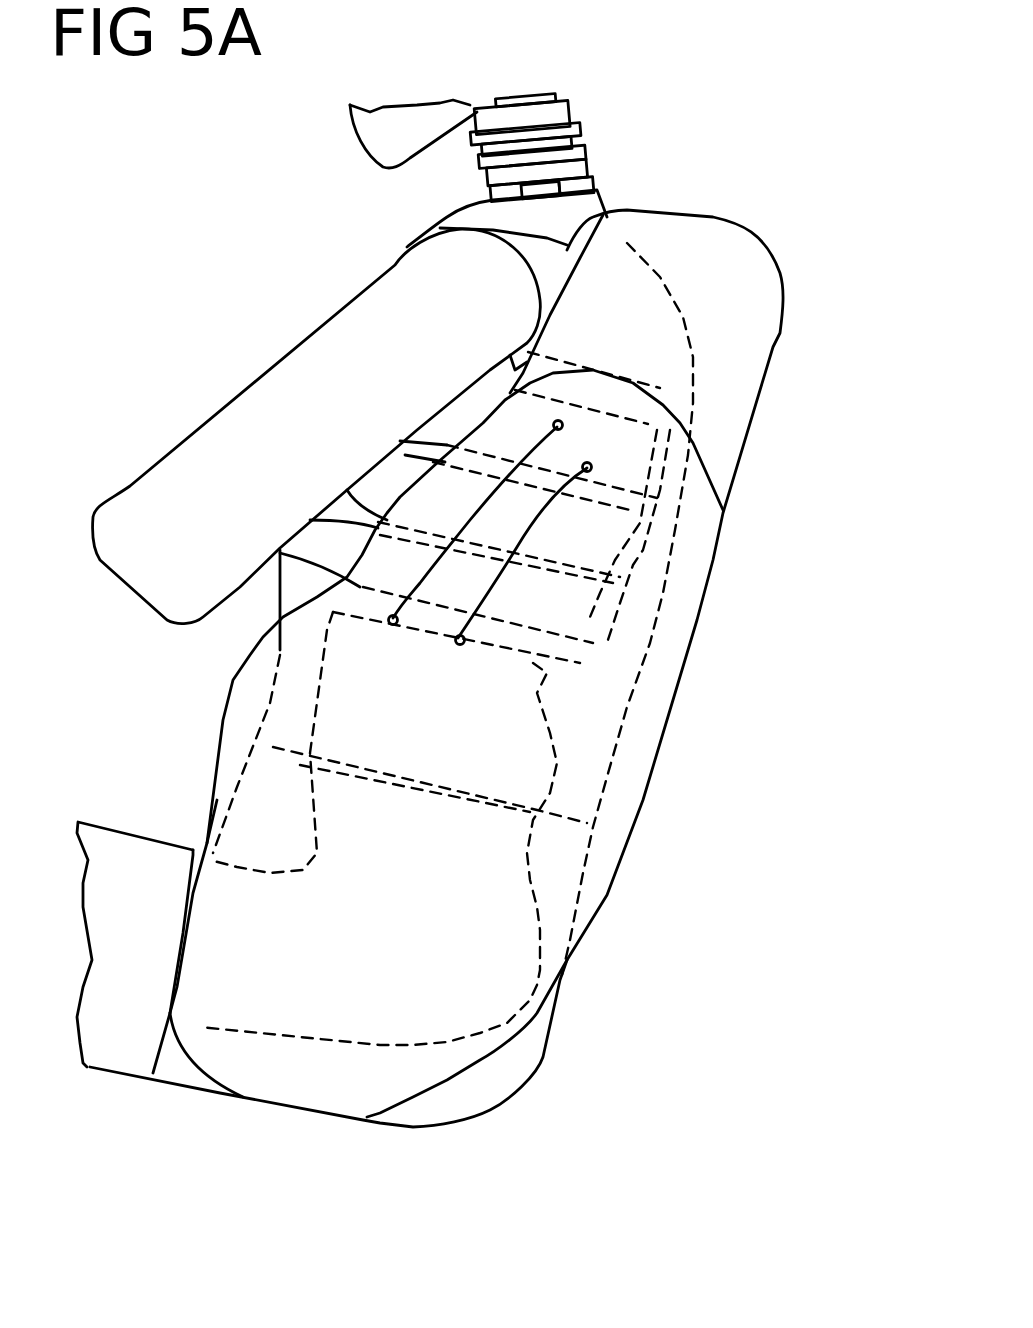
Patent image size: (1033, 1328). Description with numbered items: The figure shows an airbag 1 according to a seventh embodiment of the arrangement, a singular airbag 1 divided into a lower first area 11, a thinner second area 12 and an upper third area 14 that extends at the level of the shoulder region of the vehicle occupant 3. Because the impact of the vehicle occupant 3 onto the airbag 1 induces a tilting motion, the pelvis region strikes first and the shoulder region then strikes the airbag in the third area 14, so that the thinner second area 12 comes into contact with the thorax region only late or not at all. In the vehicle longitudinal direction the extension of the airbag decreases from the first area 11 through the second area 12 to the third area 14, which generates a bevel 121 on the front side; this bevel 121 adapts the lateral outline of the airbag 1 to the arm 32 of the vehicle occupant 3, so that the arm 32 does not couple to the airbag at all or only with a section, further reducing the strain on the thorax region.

The airbag 1 is at (830, 295).
The vehicle occupant 3 is at (440, 223).
The first area 11 is at (507, 903).
The second area 12 is at (680, 540).
The third area 14 is at (740, 387).
The arm 32 is at (220, 463).
The bevel 121 is at (440, 463).